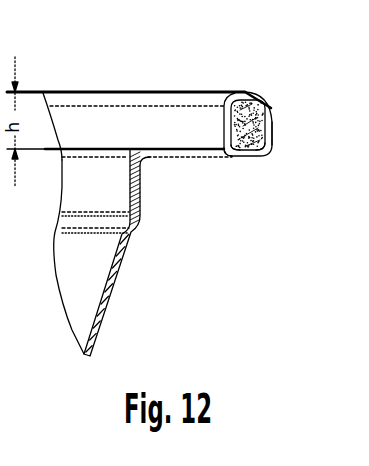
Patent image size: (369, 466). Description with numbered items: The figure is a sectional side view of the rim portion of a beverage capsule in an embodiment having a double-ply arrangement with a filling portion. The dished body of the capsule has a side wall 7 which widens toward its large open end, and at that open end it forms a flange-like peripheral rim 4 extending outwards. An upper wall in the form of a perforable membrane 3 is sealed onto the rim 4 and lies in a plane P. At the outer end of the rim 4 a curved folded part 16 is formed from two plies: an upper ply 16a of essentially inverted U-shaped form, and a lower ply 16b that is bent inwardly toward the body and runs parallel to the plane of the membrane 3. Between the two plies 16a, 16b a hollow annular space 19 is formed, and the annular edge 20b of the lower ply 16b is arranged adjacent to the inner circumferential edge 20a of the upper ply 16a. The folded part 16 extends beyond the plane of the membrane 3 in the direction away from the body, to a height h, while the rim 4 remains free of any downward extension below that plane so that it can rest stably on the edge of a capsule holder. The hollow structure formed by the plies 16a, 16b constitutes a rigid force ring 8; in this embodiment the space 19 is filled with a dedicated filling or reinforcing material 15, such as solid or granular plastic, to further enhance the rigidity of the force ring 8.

The perforable membrane 3 is at (98, 149).
The peripheral rim 4 is at (186, 150).
The side wall 7 is at (113, 276).
The force ring 8 is at (257, 85).
The filling material 15 is at (252, 122).
The curved folded part 16 is at (273, 112).
The upper ply 16a is at (231, 102).
The lower ply 16b is at (259, 148).
The hollow annular space 19 is at (272, 106).
The inner circumferential edge 20a is at (228, 155).
The annular edge 20b is at (233, 155).